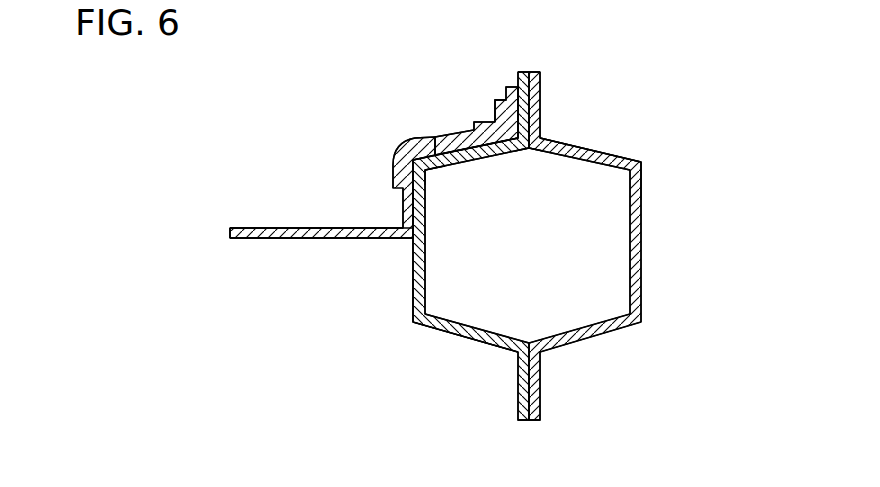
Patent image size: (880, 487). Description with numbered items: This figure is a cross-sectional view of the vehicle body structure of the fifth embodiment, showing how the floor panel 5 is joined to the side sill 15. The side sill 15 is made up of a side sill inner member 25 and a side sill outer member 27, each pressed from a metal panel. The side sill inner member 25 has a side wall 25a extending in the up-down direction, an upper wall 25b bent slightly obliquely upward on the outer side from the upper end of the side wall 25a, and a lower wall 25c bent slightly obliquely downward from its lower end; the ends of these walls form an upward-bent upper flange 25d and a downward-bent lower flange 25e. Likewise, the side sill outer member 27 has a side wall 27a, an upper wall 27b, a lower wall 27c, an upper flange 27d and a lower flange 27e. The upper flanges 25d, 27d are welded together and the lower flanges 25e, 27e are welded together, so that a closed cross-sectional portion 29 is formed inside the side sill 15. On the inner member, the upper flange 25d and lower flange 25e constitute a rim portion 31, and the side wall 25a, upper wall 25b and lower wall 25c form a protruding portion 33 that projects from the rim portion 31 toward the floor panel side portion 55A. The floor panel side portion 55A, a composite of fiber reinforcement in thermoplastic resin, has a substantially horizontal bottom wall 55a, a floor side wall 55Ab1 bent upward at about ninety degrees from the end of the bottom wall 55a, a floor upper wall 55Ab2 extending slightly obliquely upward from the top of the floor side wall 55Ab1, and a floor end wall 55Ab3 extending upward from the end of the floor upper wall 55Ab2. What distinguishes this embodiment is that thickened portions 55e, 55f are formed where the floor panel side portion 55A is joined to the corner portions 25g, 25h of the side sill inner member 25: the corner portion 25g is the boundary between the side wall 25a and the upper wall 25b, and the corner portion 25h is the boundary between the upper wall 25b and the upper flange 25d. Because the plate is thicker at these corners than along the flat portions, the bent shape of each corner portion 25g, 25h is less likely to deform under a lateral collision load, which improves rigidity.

The floor panel 5 is at (321, 233).
The side sill 15 is at (641, 162).
The side sill inner member 25 is at (413, 312).
The side wall 25a is at (413, 272).
The upper wall 25b is at (484, 148).
The lower wall 25c is at (460, 334).
The upper flange 25d is at (518, 80).
The lower flange 25e is at (520, 394).
The corner portion 25g is at (428, 172).
The corner portion 25h is at (530, 150).
The side sill outer member 27 is at (642, 290).
The side wall 27a is at (642, 236).
The upper wall 27b is at (580, 153).
The lower wall 27c is at (578, 342).
The upper flange 27d is at (541, 106).
The lower flange 27e is at (537, 394).
The closed cross-sectional portion 29 is at (545, 251).
The rim portion 31 is at (529, 246).
The protruding portion 33 is at (465, 256).
The floor panel side portion 55A is at (263, 241).
The bottom wall 55a is at (268, 226).
The floor side wall 55Ab1 is at (402, 212).
The floor upper wall 55Ab2 is at (445, 135).
The floor end wall 55Ab3 is at (510, 86).
The thickened portion 55e is at (405, 142).
The thickened portion 55f is at (493, 108).